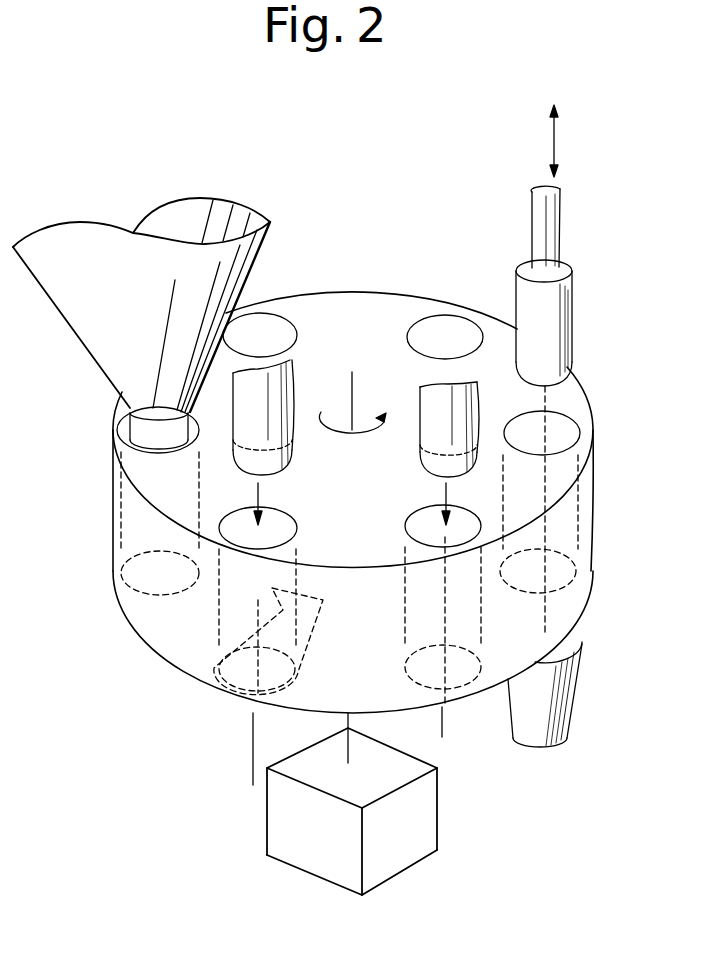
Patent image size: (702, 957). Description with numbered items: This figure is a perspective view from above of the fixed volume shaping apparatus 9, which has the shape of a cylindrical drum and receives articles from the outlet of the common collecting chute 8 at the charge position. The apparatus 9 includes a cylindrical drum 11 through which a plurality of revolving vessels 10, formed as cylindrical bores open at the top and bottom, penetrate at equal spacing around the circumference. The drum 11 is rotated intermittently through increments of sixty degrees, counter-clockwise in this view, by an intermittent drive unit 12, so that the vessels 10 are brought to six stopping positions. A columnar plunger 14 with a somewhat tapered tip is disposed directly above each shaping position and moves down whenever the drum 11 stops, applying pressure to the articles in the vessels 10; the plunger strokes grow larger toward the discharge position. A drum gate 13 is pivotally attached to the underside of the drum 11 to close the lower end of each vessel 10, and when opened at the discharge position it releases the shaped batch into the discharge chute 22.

The collecting chute 8 is at (45, 226).
The fixed volume shaping apparatus 9 is at (612, 464).
The revolving vessel 10 is at (273, 323).
The cylindrical drum 11 is at (195, 685).
The intermittent drive unit 12 is at (427, 842).
The drum gate 13 is at (308, 637).
The columnar plunger 14 is at (575, 309).
The discharge chute 22 is at (575, 693).